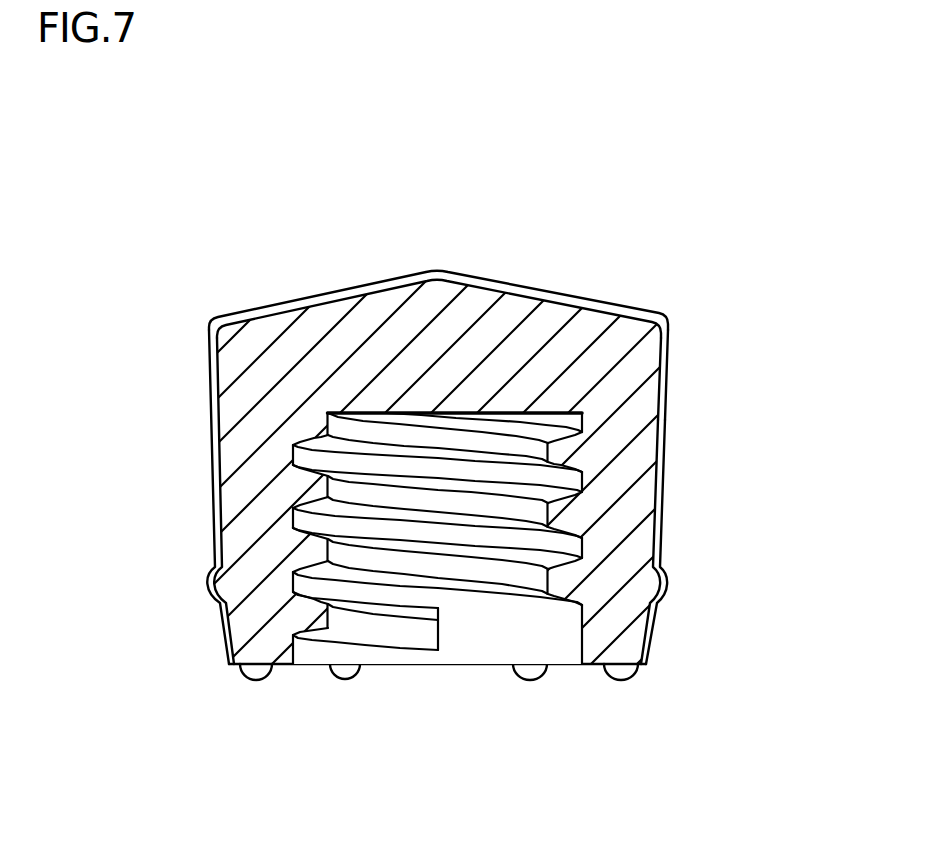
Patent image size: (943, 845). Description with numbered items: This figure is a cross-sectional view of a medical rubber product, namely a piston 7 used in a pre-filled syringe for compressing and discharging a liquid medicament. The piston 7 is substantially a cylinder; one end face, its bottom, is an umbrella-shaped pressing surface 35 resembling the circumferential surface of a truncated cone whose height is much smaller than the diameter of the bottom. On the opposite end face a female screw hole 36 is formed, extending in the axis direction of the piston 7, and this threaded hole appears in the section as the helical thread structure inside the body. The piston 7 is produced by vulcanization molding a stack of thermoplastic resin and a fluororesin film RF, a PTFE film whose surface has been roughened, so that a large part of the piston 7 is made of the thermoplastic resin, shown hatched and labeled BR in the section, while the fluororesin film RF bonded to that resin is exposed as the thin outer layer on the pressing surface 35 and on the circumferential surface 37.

The piston 7 is at (356, 280).
The pressing surface 35 is at (525, 284).
The female screw hole 36 is at (548, 572).
The circumferential surface 37 is at (662, 487).
The fluororesin film RF is at (666, 352).
The body resin BR is at (260, 373).